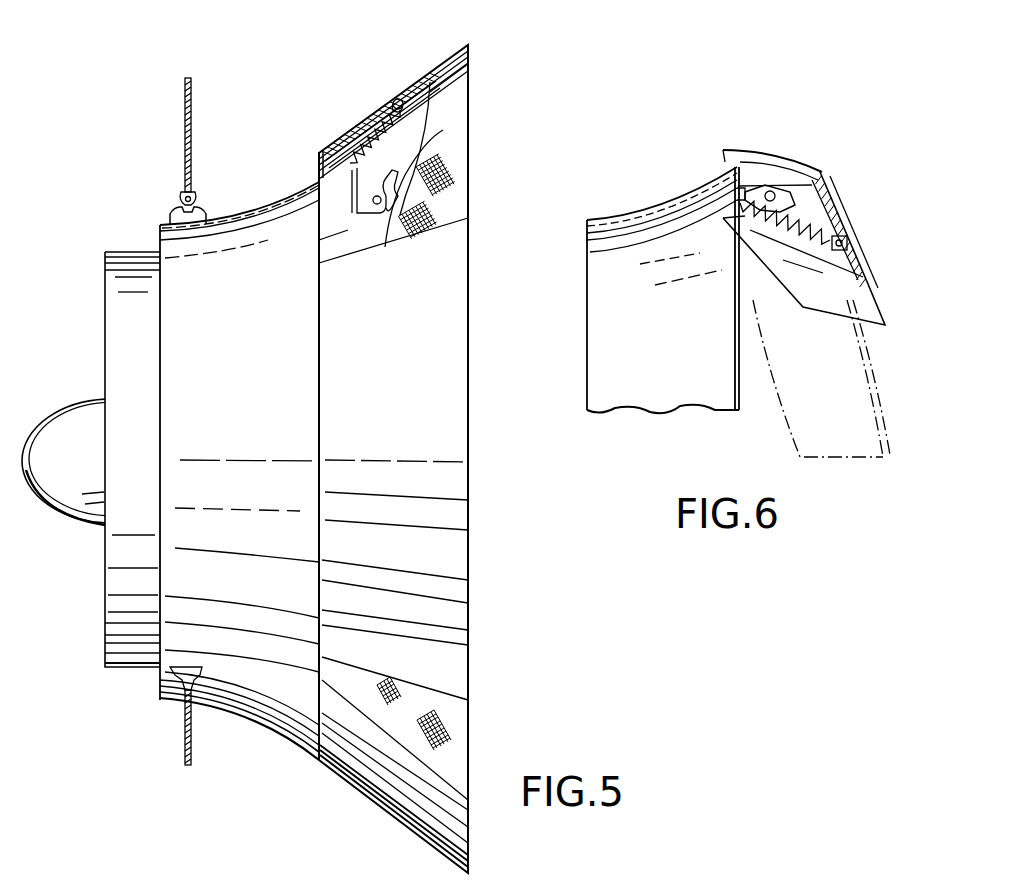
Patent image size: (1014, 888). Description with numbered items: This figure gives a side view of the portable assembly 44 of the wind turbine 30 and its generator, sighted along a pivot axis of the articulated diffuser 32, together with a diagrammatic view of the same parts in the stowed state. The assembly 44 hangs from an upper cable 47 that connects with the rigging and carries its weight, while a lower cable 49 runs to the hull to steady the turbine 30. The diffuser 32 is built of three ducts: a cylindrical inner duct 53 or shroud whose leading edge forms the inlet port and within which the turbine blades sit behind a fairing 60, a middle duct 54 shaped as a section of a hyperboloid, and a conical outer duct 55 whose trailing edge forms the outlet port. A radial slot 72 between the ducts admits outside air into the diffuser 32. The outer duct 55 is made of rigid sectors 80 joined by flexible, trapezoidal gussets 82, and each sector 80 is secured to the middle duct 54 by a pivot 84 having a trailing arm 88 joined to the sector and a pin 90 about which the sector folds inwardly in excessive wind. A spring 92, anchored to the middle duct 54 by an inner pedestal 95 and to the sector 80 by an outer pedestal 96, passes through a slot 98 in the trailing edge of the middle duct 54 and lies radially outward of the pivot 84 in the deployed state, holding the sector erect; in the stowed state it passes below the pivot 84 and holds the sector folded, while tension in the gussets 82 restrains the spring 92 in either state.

In FIG. 5, the wind turbine 30 is at (76, 393).
In FIG. 5, the articulated diffuser 32 is at (398, 78).
In FIG. 5, the assembly 44 is at (245, 90).
In FIG. 5, the upper cable 47 is at (183, 138).
In FIG. 5, the lower cable 49 is at (183, 745).
In FIG. 5, the inner duct 53 is at (122, 680).
In FIG. 5, the middle duct 54 is at (266, 727).
In FIG. 6, the middle duct 54 is at (658, 227).
In FIG. 5, the outer duct 55 is at (374, 806).
In FIG. 6, the outer duct 55 is at (840, 193).
In FIG. 5, the fairing 60 is at (27, 438).
In FIG. 5, the slot 72 is at (319, 165).
In FIG. 5, the rigid sector 80 is at (462, 96).
In FIG. 5, the flexible gusset 82 is at (462, 178).
In FIG. 5, the pivot 84 is at (400, 200).
In FIG. 6, the pivot 84 is at (775, 190).
In FIG. 5, the trailing arm 88 is at (443, 130).
In FIG. 5, the pin 90 is at (383, 196).
In FIG. 5, the spring 92 is at (352, 160).
In FIG. 6, the spring 92 is at (836, 236).
In FIG. 5, the inner pedestal 95 is at (312, 190).
In FIG. 5, the outer pedestal 96 is at (394, 100).
In FIG. 5, the slot 98 is at (340, 136).